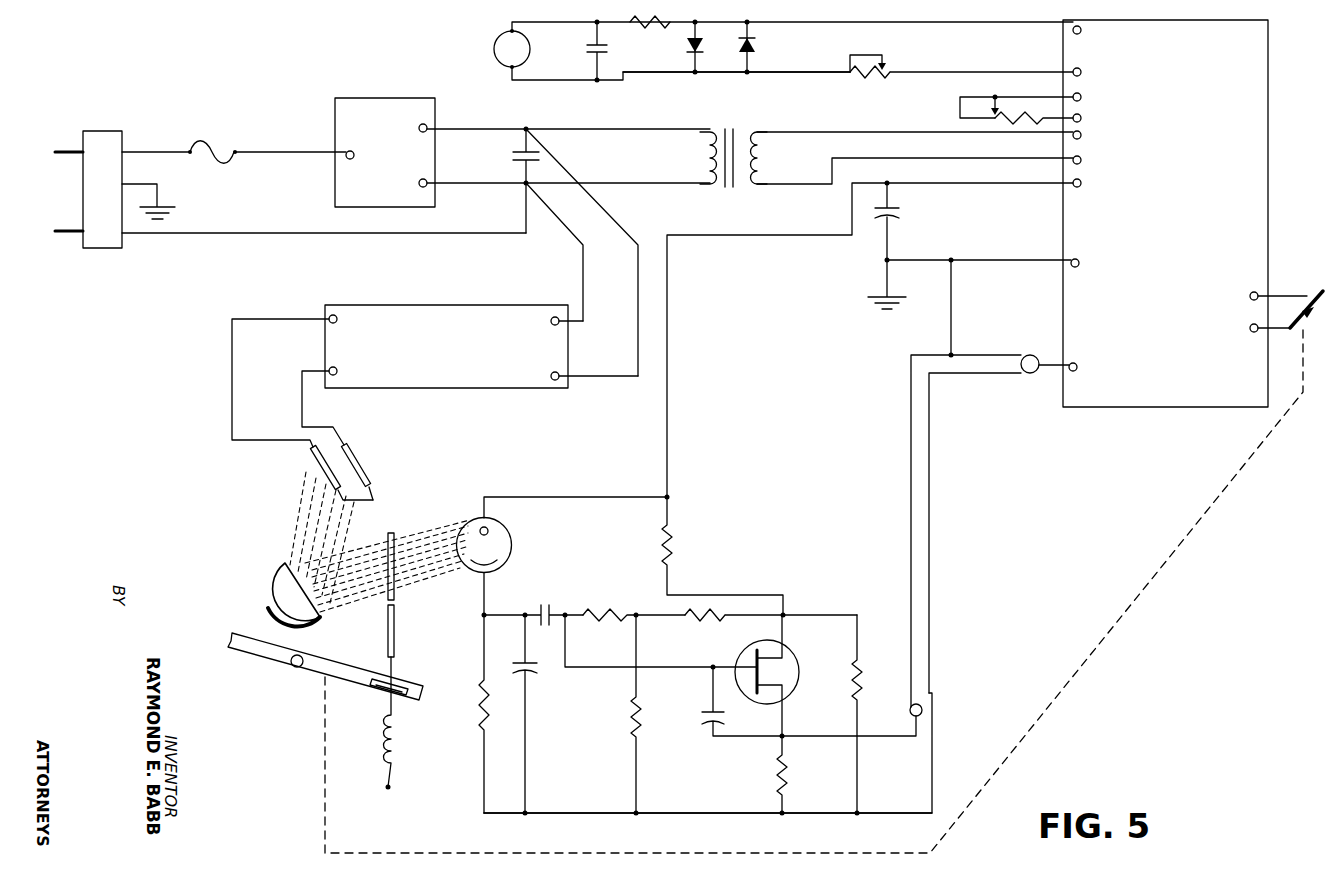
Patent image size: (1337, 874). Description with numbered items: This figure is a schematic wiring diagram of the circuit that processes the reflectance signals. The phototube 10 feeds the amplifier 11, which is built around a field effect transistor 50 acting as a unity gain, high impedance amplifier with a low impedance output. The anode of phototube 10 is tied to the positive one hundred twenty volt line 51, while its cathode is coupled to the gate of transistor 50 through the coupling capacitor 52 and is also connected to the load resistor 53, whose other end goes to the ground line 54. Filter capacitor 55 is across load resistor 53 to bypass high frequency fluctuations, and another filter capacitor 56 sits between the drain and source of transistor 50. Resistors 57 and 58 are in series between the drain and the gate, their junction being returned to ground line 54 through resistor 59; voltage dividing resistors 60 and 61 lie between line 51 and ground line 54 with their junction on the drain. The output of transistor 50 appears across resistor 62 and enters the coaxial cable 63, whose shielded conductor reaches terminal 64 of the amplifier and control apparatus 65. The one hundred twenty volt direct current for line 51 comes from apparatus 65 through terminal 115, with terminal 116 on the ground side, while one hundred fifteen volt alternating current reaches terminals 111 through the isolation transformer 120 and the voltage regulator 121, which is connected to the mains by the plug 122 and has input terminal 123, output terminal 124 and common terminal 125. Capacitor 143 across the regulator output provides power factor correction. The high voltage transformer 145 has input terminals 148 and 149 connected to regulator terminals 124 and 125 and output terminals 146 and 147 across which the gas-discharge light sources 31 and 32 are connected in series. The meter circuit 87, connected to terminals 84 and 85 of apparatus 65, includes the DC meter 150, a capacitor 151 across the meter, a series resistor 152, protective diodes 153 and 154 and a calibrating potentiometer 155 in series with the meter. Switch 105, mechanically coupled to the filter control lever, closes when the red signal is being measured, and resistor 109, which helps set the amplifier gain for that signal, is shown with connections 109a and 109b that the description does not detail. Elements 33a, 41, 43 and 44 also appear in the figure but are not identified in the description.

The phototube 10 is at (512, 551).
The amplifier 11 is at (581, 728).
The light source 31 is at (316, 463).
The light source 32 is at (353, 456).
The reflector 33a is at (282, 590).
The scale bar 41 is at (316, 676).
The slit plate 43 is at (398, 588).
The shutter vane 44 is at (396, 635).
The transistor 50 is at (796, 668).
The 120 volt line 51 is at (970, 186).
The coupling capacitor 52 is at (546, 604).
The load resistor 53 is at (478, 702).
The ground line 54 is at (566, 813).
The filter capacitor 55 is at (534, 672).
The filter capacitor 56 is at (700, 719).
The resistor 57 is at (622, 622).
The resistor 58 is at (706, 622).
The resistor 59 is at (630, 733).
The voltage dividing resistor 60 is at (672, 554).
The voltage dividing resistor 61 is at (851, 692).
The resistor 62 is at (788, 778).
The coaxial cable 63 is at (921, 667).
The terminal 64 is at (1077, 370).
The amplifier and control apparatus 65 is at (1155, 407).
The terminal 84 is at (1081, 70).
The terminal 85 is at (1081, 33).
The meter circuit 87 is at (661, 73).
The switch 105 is at (1325, 290).
The resistor 109 is at (1046, 92).
The terminal 109a is at (1081, 95).
The terminal 109b is at (1081, 116).
The terminals 111 is at (1081, 138).
The terminal 115 is at (1081, 186).
The terminal 116 is at (1079, 266).
The isolation transformer 120 is at (728, 186).
The voltage regulator 121 is at (382, 98).
The plug 122 is at (123, 134).
The input terminal 123 is at (344, 152).
The output terminal 124 is at (428, 126).
The common terminal 125 is at (418, 184).
The capacitor 143 is at (510, 158).
The high voltage transformer 145 is at (458, 388).
The output terminal 146 is at (337, 313).
The output terminal 147 is at (337, 367).
The input terminal 148 is at (550, 374).
The input terminal 149 is at (556, 316).
The DC meter 150 is at (496, 44).
The capacitor 151 is at (586, 48).
The resistor 152 is at (667, 30).
The diode 153 is at (690, 60).
The diode 154 is at (743, 60).
The calibrating potentiometer 155 is at (892, 73).